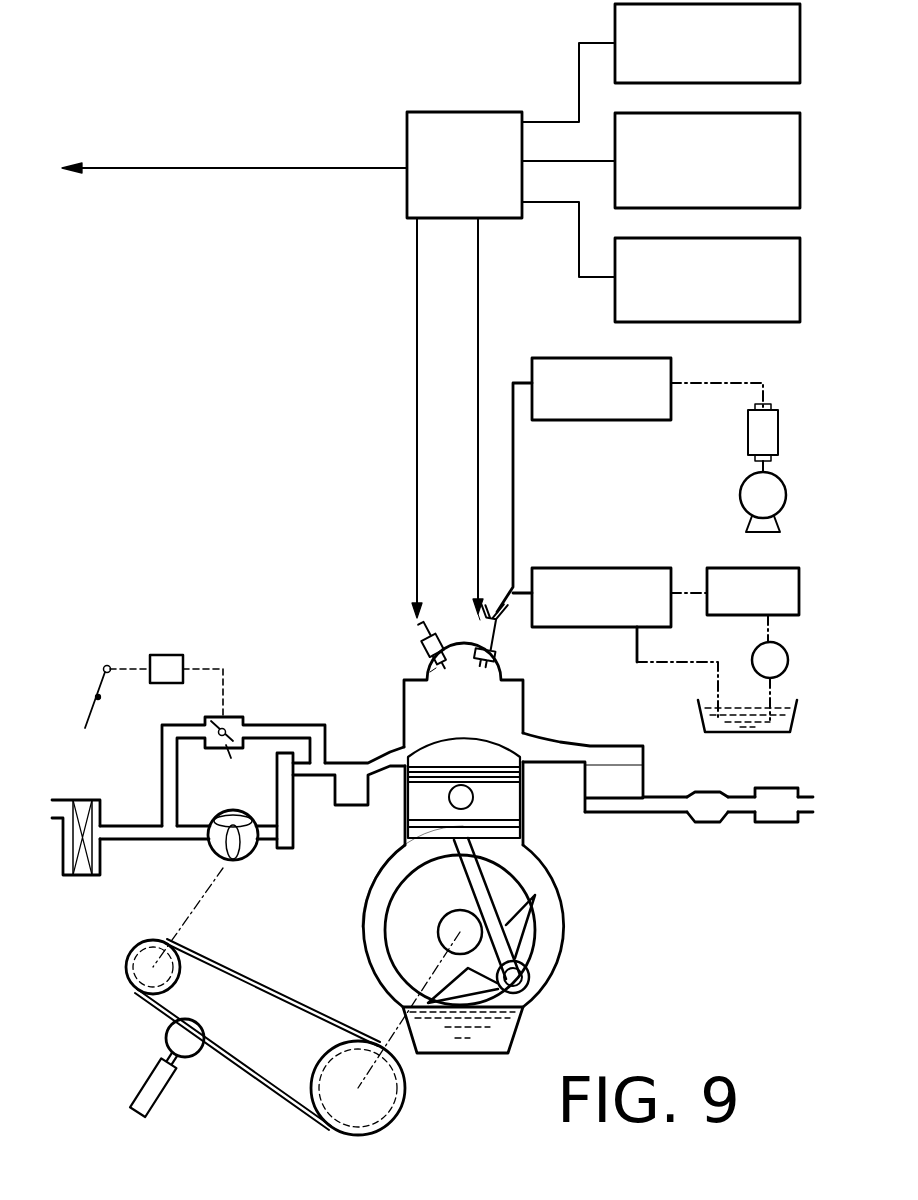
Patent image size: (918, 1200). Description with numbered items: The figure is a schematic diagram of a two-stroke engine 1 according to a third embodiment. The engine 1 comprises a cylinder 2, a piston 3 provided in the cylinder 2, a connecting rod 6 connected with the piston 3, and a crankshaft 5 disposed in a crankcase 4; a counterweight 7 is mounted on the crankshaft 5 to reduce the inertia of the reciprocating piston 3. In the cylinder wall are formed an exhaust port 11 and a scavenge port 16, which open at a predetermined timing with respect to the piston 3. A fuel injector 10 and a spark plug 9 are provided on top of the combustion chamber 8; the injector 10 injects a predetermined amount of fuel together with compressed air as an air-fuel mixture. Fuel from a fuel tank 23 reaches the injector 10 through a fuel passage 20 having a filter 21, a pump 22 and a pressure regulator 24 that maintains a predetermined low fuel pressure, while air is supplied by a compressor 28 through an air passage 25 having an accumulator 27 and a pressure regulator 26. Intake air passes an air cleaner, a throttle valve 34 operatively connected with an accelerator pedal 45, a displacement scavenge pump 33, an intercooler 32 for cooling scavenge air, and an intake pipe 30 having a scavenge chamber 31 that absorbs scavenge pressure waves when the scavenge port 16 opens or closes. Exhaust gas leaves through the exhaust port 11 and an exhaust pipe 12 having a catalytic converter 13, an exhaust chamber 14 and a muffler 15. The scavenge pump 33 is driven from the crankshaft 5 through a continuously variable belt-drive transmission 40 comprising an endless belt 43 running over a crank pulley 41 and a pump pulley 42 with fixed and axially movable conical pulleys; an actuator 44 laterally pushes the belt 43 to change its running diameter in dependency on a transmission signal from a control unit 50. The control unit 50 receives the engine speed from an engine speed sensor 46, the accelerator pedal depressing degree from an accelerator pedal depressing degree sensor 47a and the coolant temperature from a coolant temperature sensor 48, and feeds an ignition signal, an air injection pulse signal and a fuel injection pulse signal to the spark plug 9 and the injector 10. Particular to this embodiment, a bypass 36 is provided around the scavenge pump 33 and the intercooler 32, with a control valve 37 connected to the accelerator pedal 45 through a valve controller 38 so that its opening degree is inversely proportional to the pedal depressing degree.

The two-stroke engine 1 is at (534, 686).
The cylinder 2 is at (420, 707).
The piston 3 is at (510, 805).
The crankcase 4 is at (375, 892).
The crankshaft 5 is at (455, 920).
The connecting rod 6 is at (510, 952).
The counterweight 7 is at (392, 935).
The combustion chamber 8 is at (430, 672).
The spark plug 9 is at (423, 633).
The fuel injector 10 is at (505, 640).
The exhaust port 11 is at (530, 748).
The exhaust pipe 12 is at (653, 815).
The catalytic converter 13 is at (633, 780).
The exhaust chamber 14 is at (710, 823).
The muffler 15 is at (780, 822).
The scavenge port 16 is at (393, 752).
The fuel passage 20 is at (516, 578).
The filter 21 is at (735, 568).
The pump 22 is at (752, 658).
The fuel tank 23 is at (700, 717).
The pressure regulator 24 is at (641, 568).
The air passage 25 is at (513, 522).
The pressure regulator 26 is at (616, 421).
The accumulator 27 is at (748, 438).
The compressor 28 is at (742, 500).
The intake pipe 30 is at (313, 778).
The scavenge chamber 31 is at (338, 808).
The intercooler 32 is at (285, 848).
The scavenge pump 33 is at (207, 857).
The throttle valve 34 is at (90, 878).
The bypass 36 is at (290, 725).
The control valve 37 is at (231, 750).
The valve controller 38 is at (182, 655).
The continuously variable belt-drive transmission 40 is at (253, 1072).
The crank pulley 41 is at (405, 1112).
The pump pulley 42 is at (140, 995).
The endless belt 43 is at (305, 1003).
The actuator 44 is at (142, 1093).
The accelerator pedal 45 is at (80, 725).
The engine speed sensor 46 is at (615, 33).
The accelerator pedal depressing degree sensor 47a is at (615, 128).
The coolant temperature sensor 48 is at (615, 255).
The control unit 50 is at (407, 216).